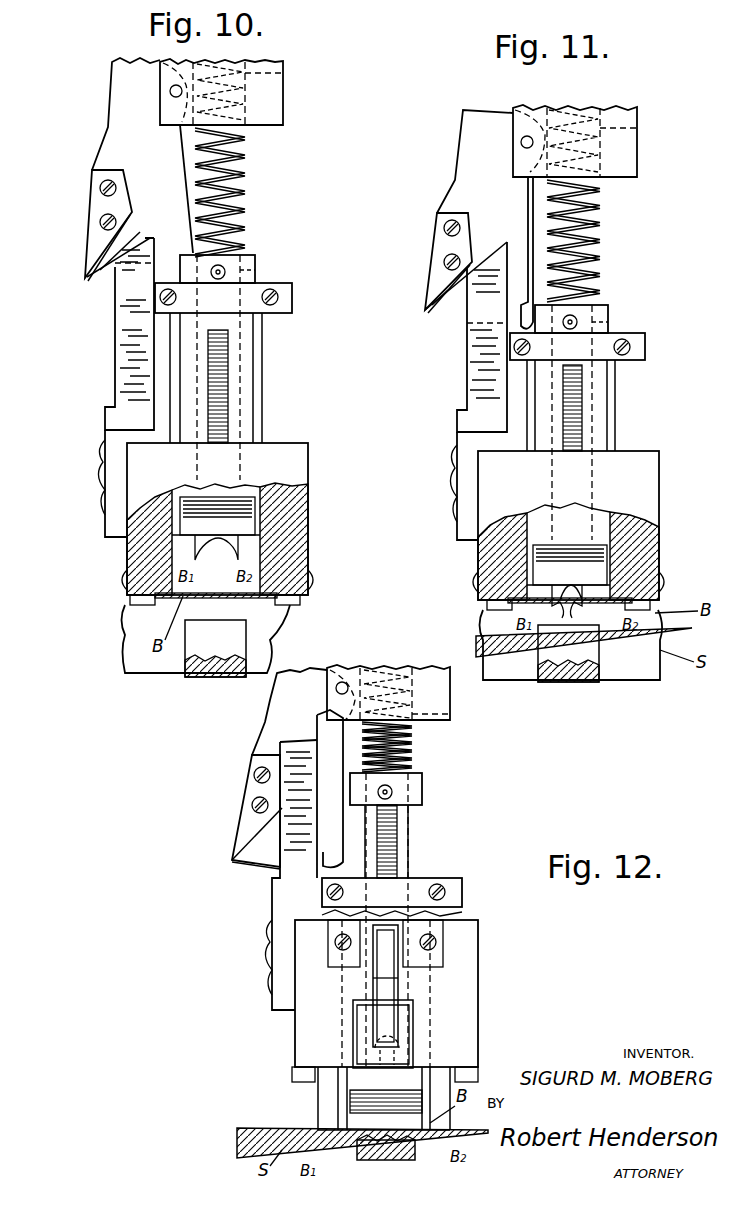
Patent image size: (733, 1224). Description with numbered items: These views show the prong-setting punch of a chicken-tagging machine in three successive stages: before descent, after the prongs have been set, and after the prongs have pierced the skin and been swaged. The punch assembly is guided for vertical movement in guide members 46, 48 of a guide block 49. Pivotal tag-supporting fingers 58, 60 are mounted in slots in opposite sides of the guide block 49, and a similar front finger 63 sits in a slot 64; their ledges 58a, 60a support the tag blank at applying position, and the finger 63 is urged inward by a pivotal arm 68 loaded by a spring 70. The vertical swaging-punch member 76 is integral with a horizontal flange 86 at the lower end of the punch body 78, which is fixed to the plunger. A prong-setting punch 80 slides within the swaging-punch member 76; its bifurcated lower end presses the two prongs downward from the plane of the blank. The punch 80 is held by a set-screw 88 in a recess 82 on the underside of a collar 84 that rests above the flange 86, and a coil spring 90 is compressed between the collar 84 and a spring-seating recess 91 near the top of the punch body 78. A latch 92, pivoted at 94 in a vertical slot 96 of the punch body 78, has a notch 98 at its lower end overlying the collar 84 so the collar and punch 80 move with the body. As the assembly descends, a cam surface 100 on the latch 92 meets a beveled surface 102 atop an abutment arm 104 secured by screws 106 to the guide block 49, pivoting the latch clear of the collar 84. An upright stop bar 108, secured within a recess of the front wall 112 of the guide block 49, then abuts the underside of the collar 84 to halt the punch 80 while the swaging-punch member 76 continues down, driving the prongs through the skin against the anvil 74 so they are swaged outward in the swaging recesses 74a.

In FIG. 10, the guide member 46 is at (150, 556).
In FIG. 11, the guide member 46 is at (495, 553).
In FIG. 10, the guide member 48 is at (292, 553).
In FIG. 11, the guide member 48 is at (655, 537).
In FIG. 11, the guide block 49 is at (676, 517).
In FIG. 12, the guide block 49 is at (493, 993).
In FIG. 10, the tag-supporting finger 58 is at (130, 600).
In FIG. 11, the tag-supporting finger 58 is at (487, 604).
In FIG. 12, the tag-supporting finger 58 is at (292, 1072).
In FIG. 10, the ledge 58a is at (125, 580).
In FIG. 11, the ledge 58a is at (484, 618).
In FIG. 10, the tag-supporting finger 60 is at (300, 600).
In FIG. 11, the tag-supporting finger 60 is at (650, 604).
In FIG. 12, the tag-supporting finger 60 is at (478, 1068).
In FIG. 10, the ledge 60a is at (290, 582).
In FIG. 11, the ledge 60a is at (662, 580).
In FIG. 12, the tag-supporting finger 63 is at (356, 1036).
In FIG. 12, the slot 64 is at (410, 1030).
In FIG. 12, the pivotal arm 68 is at (386, 985).
In FIG. 12, the spring 70 is at (398, 980).
In FIG. 10, the anvil 74 is at (228, 675).
In FIG. 11, the anvil 74 is at (580, 682).
In FIG. 12, the anvil 74 is at (410, 1158).
In FIG. 10, the swaging recesses 74a is at (215, 662).
In FIG. 11, the swaging recesses 74a is at (545, 665).
In FIG. 12, the swaging recesses 74a is at (368, 1150).
In FIG. 10, the swaging-punch member 76 is at (180, 517).
In FIG. 11, the swaging-punch member 76 is at (555, 572).
In FIG. 12, the swaging-punch member 76 is at (372, 1103).
In FIG. 10, the punch body 78 is at (283, 103).
In FIG. 11, the punch body 78 is at (637, 150).
In FIG. 12, the punch body 78 is at (450, 710).
In FIG. 10, the prong-setting punch 80 is at (230, 547).
In FIG. 11, the prong-setting punch 80 is at (588, 592).
In FIG. 12, the prong-setting punch 80 is at (500, 1045).
In FIG. 10, the recess 82 is at (255, 270).
In FIG. 11, the recess 82 is at (608, 322).
In FIG. 12, the recess 82 is at (408, 792).
In FIG. 10, the collar 84 is at (255, 262).
In FIG. 11, the collar 84 is at (608, 314).
In FIG. 12, the collar 84 is at (422, 780).
In FIG. 10, the flange 86 is at (292, 297).
In FIG. 11, the flange 86 is at (645, 347).
In FIG. 12, the flange 86 is at (462, 888).
In FIG. 10, the set-screw 88 is at (224, 268).
In FIG. 11, the set-screw 88 is at (576, 318).
In FIG. 12, the set-screw 88 is at (390, 797).
In FIG. 10, the coil spring 90 is at (245, 160).
In FIG. 11, the coil spring 90 is at (600, 228).
In FIG. 12, the coil spring 90 is at (412, 752).
In FIG. 10, the spring-seating recess 91 is at (283, 73).
In FIG. 11, the spring-seating recess 91 is at (637, 128).
In FIG. 12, the spring-seating recess 91 is at (440, 720).
In FIG. 10, the latch 92 is at (113, 148).
In FIG. 11, the latch 92 is at (460, 190).
In FIG. 12, the latch 92 is at (248, 853).
In FIG. 10, the pivot 94 is at (170, 91).
In FIG. 11, the pivot 94 is at (521, 141).
In FIG. 12, the pivot 94 is at (347, 683).
In FIG. 10, the vertical slot 96 is at (163, 52).
In FIG. 11, the vertical slot 96 is at (520, 96).
In FIG. 12, the vertical slot 96 is at (327, 707).
In FIG. 10, the notch 98 is at (190, 263).
In FIG. 11, the notch 98 is at (515, 333).
In FIG. 12, the notch 98 is at (320, 882).
In FIG. 10, the cam surface 100 is at (100, 270).
In FIG. 11, the cam surface 100 is at (432, 309).
In FIG. 12, the cam surface 100 is at (252, 836).
In FIG. 10, the beveled surface 102 is at (120, 242).
In FIG. 11, the beveled surface 102 is at (485, 248).
In FIG. 12, the beveled surface 102 is at (268, 735).
In FIG. 10, the abutment arm 104 is at (125, 346).
In FIG. 11, the abutment arm 104 is at (478, 374).
In FIG. 12, the abutment arm 104 is at (288, 840).
In FIG. 10, the screws 106 is at (100, 462).
In FIG. 11, the screws 106 is at (452, 505).
In FIG. 12, the screws 106 is at (270, 965).
In FIG. 10, the stop bar 108 is at (222, 370).
In FIG. 11, the stop bar 108 is at (578, 385).
In FIG. 12, the stop bar 108 is at (390, 850).
In FIG. 10, the front wall 112 is at (292, 457).
In FIG. 11, the front wall 112 is at (642, 478).
In FIG. 12, the front wall 112 is at (468, 966).